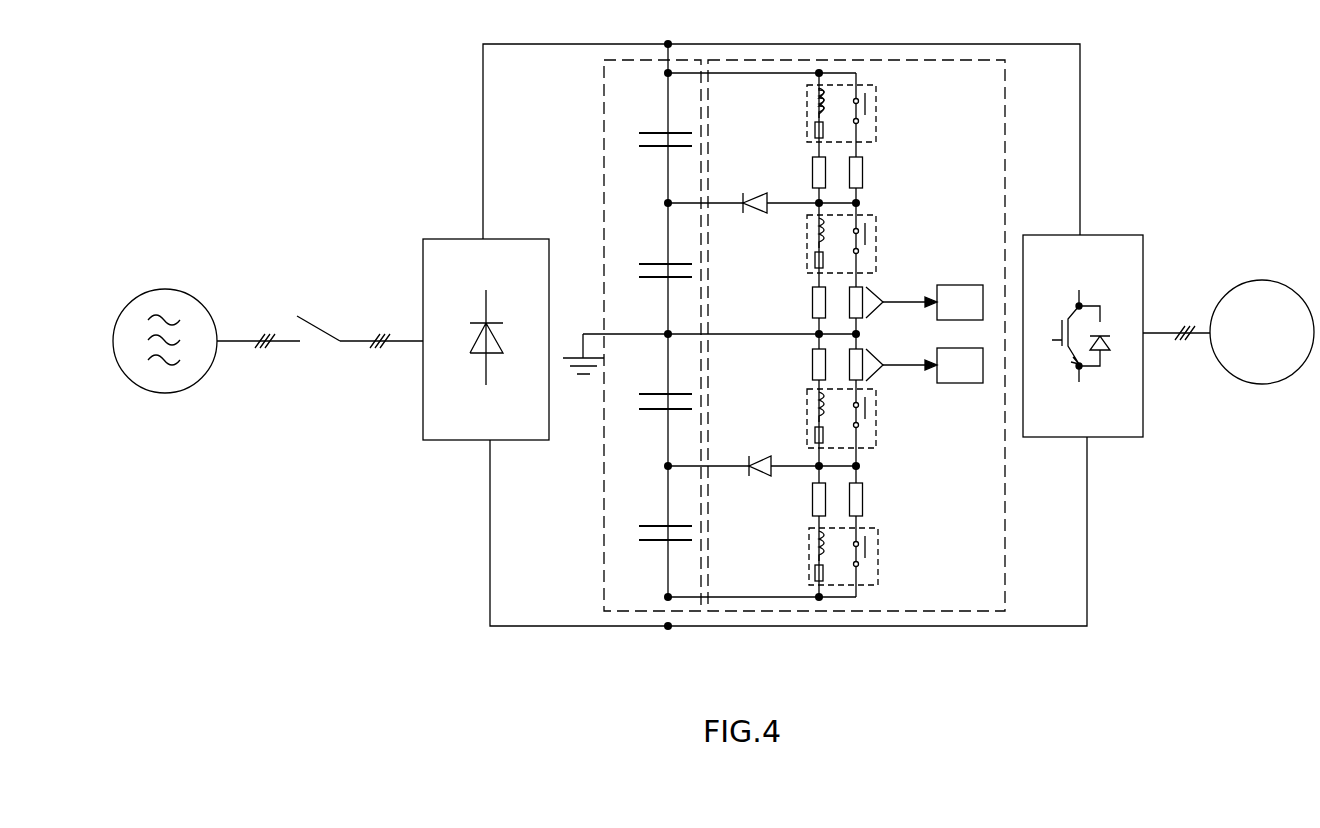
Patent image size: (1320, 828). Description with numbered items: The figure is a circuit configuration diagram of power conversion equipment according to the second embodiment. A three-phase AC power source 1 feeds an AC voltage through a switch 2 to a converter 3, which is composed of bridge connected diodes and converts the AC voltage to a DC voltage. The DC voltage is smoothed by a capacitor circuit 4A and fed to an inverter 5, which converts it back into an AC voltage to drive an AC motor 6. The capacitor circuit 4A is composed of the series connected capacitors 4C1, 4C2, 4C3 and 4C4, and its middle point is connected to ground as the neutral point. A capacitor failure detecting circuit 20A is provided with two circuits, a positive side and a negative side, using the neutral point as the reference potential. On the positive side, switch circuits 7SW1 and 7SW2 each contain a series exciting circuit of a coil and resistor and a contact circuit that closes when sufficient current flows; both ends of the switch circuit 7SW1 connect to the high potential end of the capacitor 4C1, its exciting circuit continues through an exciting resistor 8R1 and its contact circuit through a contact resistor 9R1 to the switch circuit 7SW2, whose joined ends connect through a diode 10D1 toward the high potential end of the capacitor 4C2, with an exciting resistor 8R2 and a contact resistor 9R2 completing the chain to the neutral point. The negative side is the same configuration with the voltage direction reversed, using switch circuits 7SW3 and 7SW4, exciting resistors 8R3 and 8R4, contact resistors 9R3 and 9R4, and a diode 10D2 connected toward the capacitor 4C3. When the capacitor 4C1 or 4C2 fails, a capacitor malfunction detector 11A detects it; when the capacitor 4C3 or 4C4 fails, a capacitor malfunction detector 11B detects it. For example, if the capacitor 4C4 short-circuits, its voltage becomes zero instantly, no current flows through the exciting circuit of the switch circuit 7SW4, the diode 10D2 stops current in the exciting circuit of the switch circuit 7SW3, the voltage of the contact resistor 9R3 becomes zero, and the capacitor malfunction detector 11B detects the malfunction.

The three-phase AC power source 1 is at (165, 289).
The switch 2 is at (327, 330).
The converter 3 is at (470, 239).
The capacitor circuit 4A is at (650, 60).
The capacitor 4C1 is at (645, 133).
The capacitor 4C2 is at (648, 264).
The capacitor 4C3 is at (648, 394).
The capacitor 4C4 is at (648, 526).
The inverter 5 is at (1100, 235).
The AC motor 6 is at (1262, 280).
The switch circuit 7SW1 is at (877, 103).
The switch circuit 7SW2 is at (877, 224).
The switch circuit 7SW3 is at (877, 423).
The switch circuit 7SW4 is at (877, 546).
The exciting resistor 8R1 is at (812, 165).
The exciting resistor 8R2 is at (812, 304).
The exciting resistor 8R3 is at (812, 375).
The exciting resistor 8R4 is at (812, 512).
The contact resistor 9R1 is at (864, 167).
The contact resistor 9R2 is at (864, 298).
The contact resistor 9R3 is at (864, 358).
The contact resistor 9R4 is at (864, 494).
The diode 10D1 is at (757, 200).
The diode 10D2 is at (760, 463).
The capacitor malfunction detector 11A is at (953, 285).
The capacitor malfunction detector 11B is at (960, 383).
The capacitor failure detecting circuit 20A is at (835, 60).